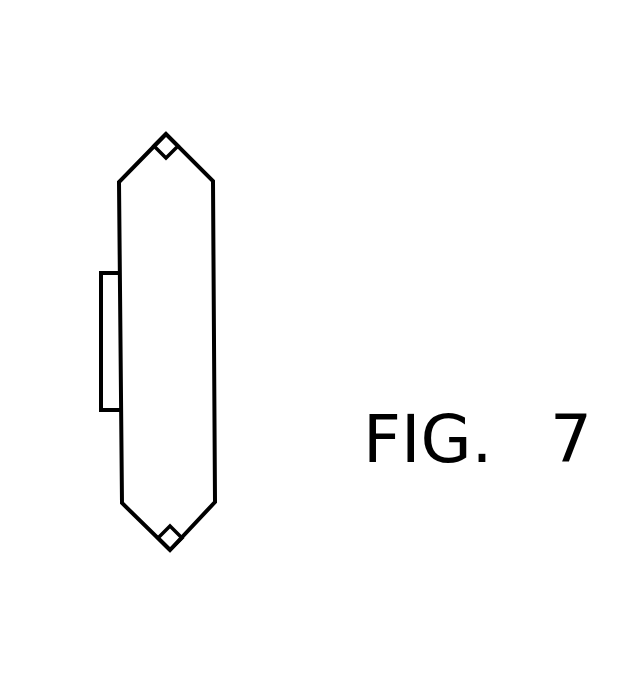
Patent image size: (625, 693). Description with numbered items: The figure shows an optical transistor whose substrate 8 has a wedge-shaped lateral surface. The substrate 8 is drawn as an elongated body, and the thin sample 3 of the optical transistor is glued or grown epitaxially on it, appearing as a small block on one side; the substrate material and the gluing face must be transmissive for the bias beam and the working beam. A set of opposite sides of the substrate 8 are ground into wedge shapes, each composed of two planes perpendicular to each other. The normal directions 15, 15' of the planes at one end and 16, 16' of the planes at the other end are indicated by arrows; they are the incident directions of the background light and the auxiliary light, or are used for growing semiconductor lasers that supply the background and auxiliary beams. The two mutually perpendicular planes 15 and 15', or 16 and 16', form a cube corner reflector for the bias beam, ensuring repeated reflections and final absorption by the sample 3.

The substrate 8 is at (178, 343).
The wedge-shape plane normal direction 15 is at (232, 89).
The wedge-shape plane normal direction 15' is at (98, 86).
The wedge-shape plane normal direction 16 is at (244, 600).
The wedge-shape plane normal direction 16' is at (96, 606).
The sample 3 is at (110, 319).